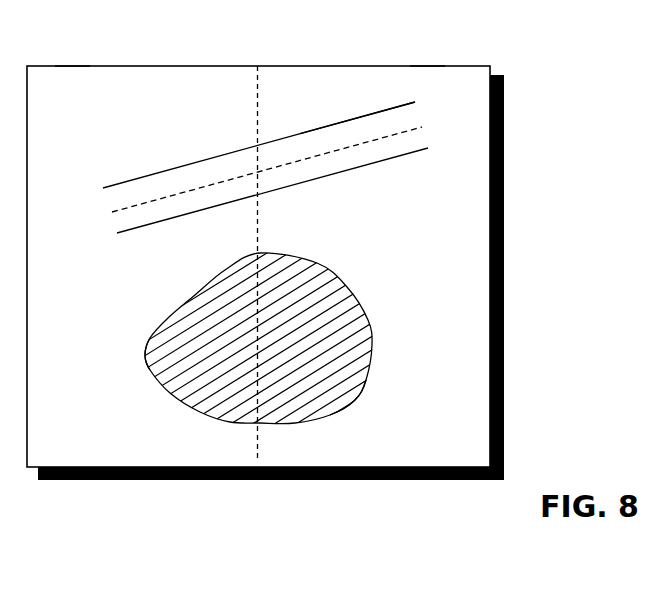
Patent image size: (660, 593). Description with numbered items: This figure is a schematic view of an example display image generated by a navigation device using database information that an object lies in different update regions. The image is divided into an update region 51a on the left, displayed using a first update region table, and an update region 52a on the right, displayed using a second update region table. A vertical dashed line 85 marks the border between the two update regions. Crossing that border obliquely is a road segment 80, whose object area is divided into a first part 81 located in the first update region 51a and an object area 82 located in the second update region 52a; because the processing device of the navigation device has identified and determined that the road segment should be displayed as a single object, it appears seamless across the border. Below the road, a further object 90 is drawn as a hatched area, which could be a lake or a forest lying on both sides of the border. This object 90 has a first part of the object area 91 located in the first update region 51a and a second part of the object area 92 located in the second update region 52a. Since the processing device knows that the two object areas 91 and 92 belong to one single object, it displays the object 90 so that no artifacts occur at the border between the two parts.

The update region 51a is at (71, 66).
The update region 52a is at (428, 66).
The road segment 80 is at (387, 162).
The first part 81 is at (167, 169).
The object area 82 is at (356, 118).
The dashed line 85 is at (259, 101).
The object 90 is at (347, 283).
The first part of the object area 91 is at (167, 395).
The second part of the object area 92 is at (350, 403).